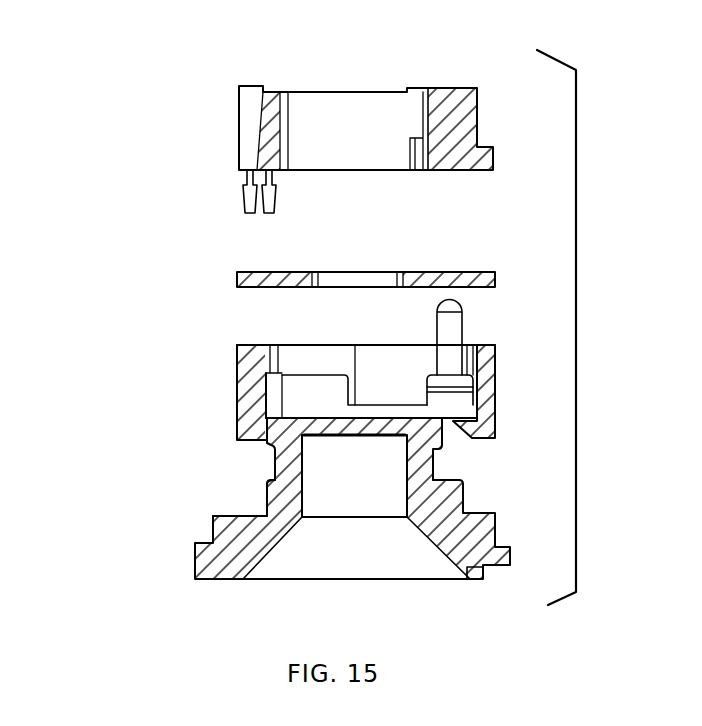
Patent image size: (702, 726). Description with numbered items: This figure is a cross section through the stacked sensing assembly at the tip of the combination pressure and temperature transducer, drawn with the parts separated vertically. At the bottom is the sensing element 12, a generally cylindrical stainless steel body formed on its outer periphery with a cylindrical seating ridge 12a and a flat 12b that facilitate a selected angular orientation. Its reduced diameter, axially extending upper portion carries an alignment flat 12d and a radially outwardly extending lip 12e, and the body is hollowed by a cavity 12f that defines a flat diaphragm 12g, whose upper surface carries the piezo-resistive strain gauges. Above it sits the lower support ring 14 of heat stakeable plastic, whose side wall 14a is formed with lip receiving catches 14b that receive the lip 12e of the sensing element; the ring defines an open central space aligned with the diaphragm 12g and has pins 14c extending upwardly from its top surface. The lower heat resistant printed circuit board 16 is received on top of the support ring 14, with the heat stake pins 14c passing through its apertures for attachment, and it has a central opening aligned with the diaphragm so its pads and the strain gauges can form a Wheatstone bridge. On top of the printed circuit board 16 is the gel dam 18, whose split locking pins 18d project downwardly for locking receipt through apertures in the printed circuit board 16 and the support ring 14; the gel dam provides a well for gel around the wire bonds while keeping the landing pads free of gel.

The sensing element 12 is at (258, 530).
The cylindrical seating ridge 12a is at (213, 521).
The flat 12b is at (500, 592).
The alignment flat 12d is at (266, 497).
The radially outwardly extending lip 12e is at (467, 490).
The cavity 12f is at (374, 498).
The flat diaphragm 12g is at (366, 428).
The lower support ring 14 is at (245, 397).
The side wall 14a is at (246, 405).
The lip receiving catch 14b is at (510, 460).
The pin 14c is at (479, 338).
The printed circuit board 16 is at (262, 283).
The gel dam 18 is at (258, 151).
The split locking pin 18d is at (189, 191).